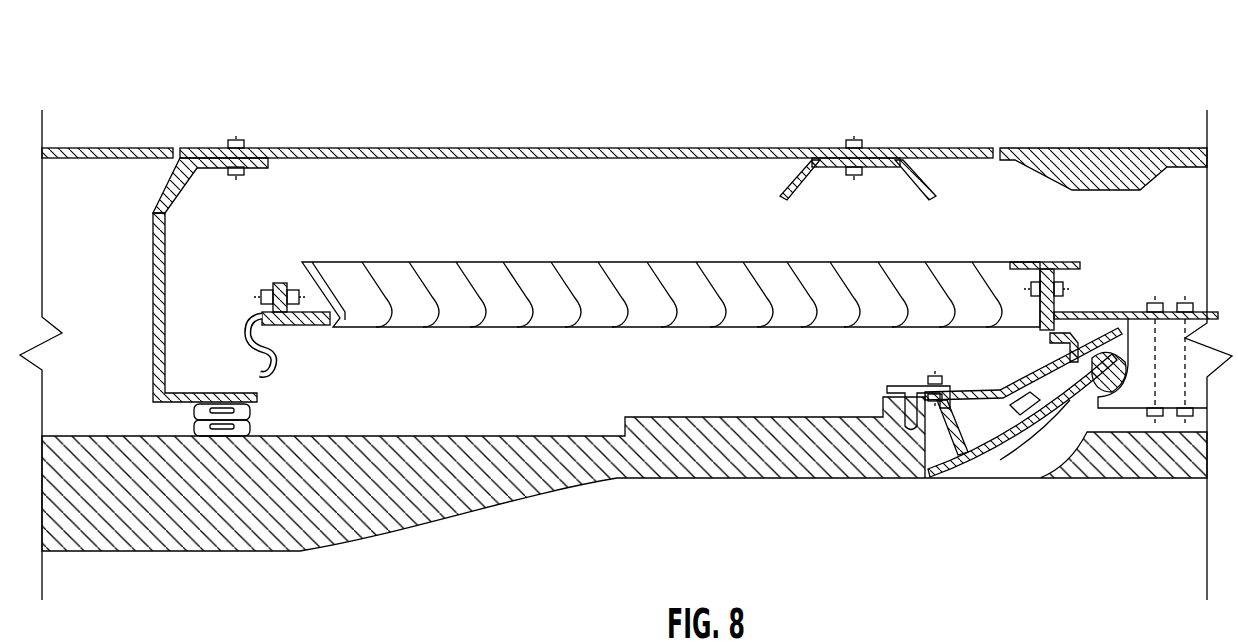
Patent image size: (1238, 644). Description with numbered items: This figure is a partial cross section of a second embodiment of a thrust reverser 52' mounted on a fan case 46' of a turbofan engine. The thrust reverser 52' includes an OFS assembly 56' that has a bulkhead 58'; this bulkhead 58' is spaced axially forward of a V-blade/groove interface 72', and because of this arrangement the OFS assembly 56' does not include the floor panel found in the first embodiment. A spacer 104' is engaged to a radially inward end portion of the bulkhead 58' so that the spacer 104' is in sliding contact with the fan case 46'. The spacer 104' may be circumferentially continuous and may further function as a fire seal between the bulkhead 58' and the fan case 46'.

The fan case 46' is at (624, 499).
The thrust reverser 52' is at (624, 115).
The OFS assembly 56' is at (176, 233).
The bulkhead 58' is at (205, 307).
The V-blade/groove interface 72' is at (975, 402).
The spacer 104' is at (263, 405).